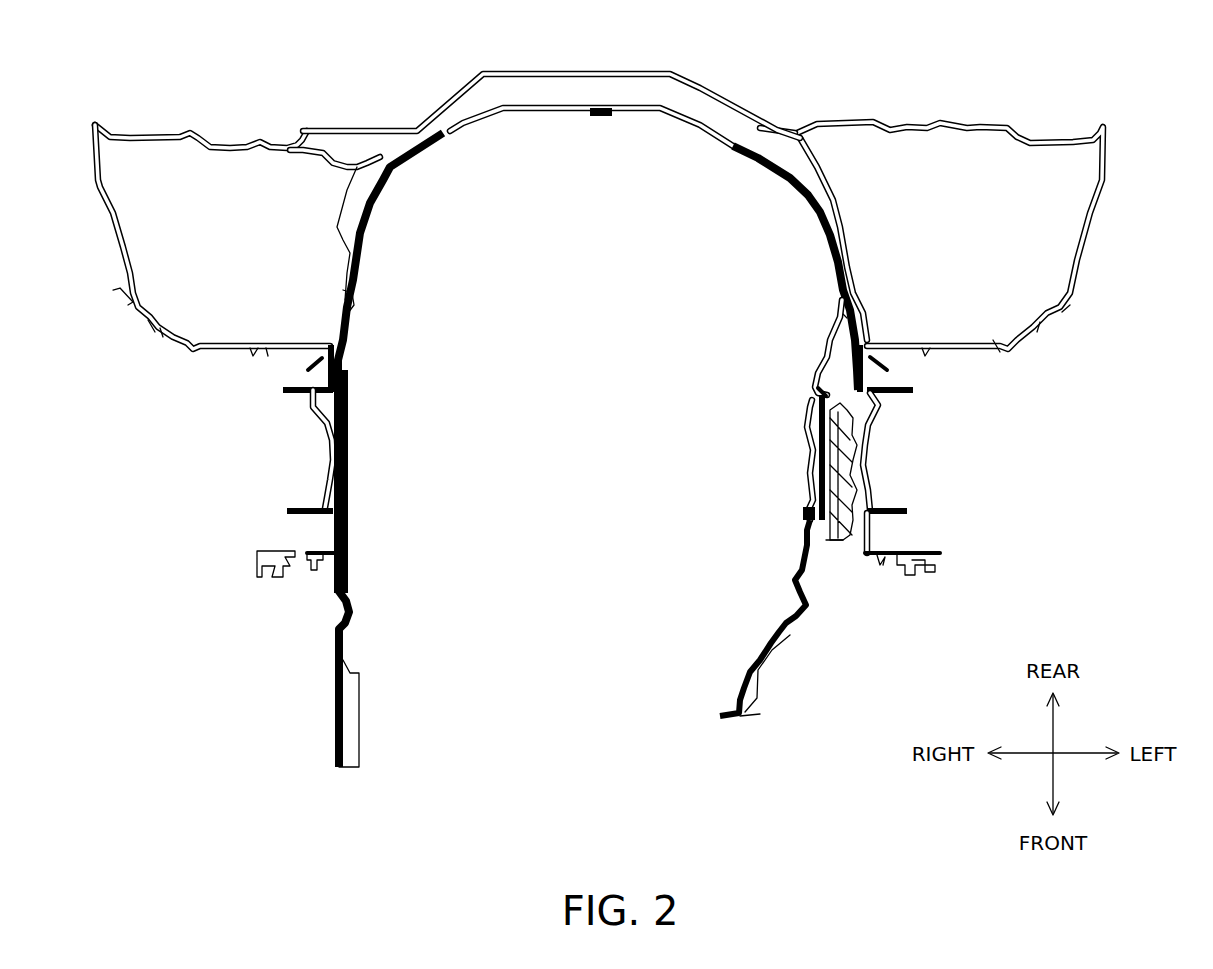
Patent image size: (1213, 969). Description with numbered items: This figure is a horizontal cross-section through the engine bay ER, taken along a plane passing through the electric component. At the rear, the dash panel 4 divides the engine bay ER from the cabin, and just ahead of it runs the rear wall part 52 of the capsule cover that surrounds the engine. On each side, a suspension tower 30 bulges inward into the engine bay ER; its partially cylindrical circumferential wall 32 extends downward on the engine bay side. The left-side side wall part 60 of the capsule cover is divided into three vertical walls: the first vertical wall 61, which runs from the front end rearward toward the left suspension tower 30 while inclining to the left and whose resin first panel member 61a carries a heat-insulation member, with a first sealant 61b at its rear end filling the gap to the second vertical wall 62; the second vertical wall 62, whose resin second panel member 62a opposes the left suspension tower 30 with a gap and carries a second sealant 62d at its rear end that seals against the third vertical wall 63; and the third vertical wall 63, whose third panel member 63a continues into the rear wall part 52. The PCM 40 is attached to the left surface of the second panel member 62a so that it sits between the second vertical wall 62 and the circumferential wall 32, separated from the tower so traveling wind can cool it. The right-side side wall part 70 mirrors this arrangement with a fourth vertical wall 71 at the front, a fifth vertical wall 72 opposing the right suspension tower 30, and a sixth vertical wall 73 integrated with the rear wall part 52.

The dash panel 4 is at (638, 72).
The rear wall part 52 is at (670, 122).
The suspension tower 30 is at (599, 349).
The circumferential wall 32 is at (327, 438).
The PCM 40 is at (833, 552).
The left-side side wall part 60 is at (808, 431).
The first vertical wall 61 is at (777, 591).
The first panel member 61a is at (797, 637).
The first sealant 61b is at (805, 510).
The second vertical wall 62 is at (841, 434).
The second panel member 62a is at (830, 430).
The second sealant 62d is at (805, 362).
The third vertical wall 63 is at (768, 277).
The third panel member 63a is at (838, 247).
The right-side side wall part 70 is at (439, 450).
The fourth vertical wall 71 is at (375, 658).
The fifth vertical wall 72 is at (378, 407).
The sixth vertical wall 73 is at (362, 317).
The engine bay ER is at (548, 700).